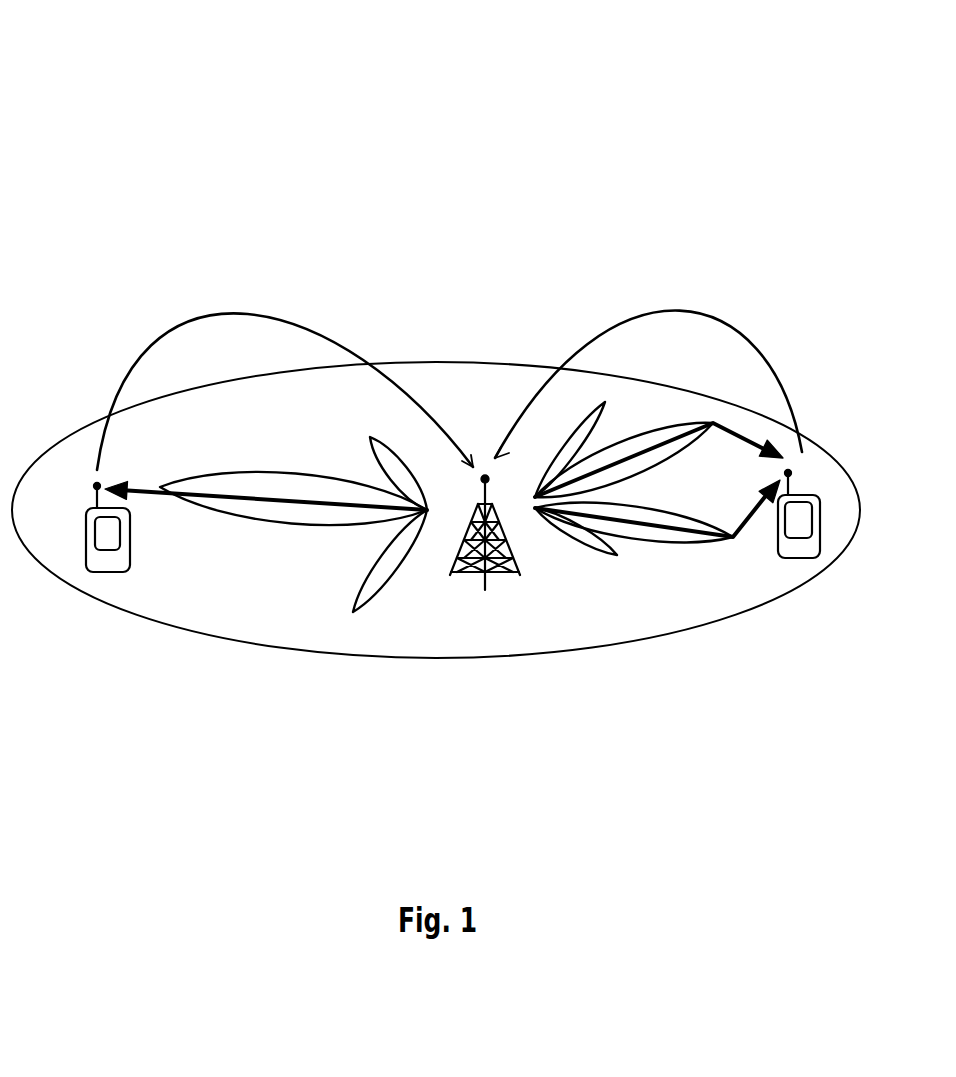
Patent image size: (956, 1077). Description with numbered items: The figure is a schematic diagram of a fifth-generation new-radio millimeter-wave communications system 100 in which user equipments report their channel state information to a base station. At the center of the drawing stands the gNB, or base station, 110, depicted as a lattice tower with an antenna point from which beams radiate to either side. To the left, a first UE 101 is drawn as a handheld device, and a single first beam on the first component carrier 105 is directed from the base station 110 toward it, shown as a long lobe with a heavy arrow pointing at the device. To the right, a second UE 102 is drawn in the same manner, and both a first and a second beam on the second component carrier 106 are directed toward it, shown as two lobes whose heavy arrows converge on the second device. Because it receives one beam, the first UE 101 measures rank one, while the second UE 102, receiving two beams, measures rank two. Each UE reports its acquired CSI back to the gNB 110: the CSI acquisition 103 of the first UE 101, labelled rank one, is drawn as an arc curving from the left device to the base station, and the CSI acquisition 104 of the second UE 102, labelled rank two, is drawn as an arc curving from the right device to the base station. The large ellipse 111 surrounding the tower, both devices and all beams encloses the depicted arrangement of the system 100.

The 5G NR mmWave communications system 100 is at (235, 92).
The first UE 101 is at (107, 582).
The second UE 102 is at (790, 572).
The CSI acquisition 103 is at (182, 327).
The CSI acquisition 104 is at (633, 315).
The component carrier 1 105 is at (257, 583).
The component carrier 2 106 is at (672, 613).
The gNB (base station) 110 is at (465, 600).
The cell coverage area 111 is at (473, 362).